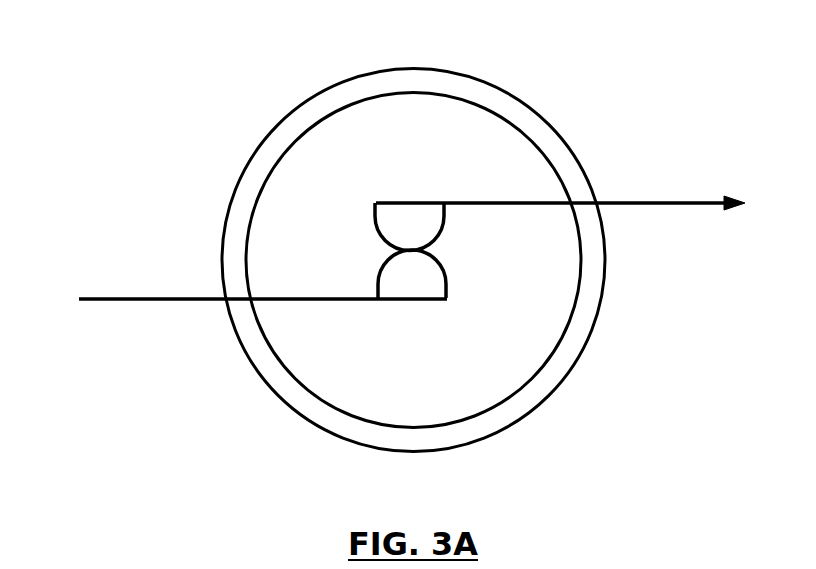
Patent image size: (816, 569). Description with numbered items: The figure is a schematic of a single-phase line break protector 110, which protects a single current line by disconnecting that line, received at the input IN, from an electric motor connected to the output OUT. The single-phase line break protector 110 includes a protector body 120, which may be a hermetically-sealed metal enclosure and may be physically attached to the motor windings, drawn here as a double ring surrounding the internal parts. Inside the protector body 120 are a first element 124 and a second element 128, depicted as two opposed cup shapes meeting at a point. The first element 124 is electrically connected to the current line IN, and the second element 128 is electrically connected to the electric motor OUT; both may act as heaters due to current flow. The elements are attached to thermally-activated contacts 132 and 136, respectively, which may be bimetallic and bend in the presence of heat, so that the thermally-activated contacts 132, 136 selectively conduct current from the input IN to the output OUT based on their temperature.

The single-phase line break protector 110 is at (138, 50).
The protector body 120 is at (281, 140).
The first element 124 is at (410, 218).
The second element 128 is at (412, 280).
The thermally-activated contact 132 is at (273, 298).
The thermally-activated contact 136 is at (540, 204).